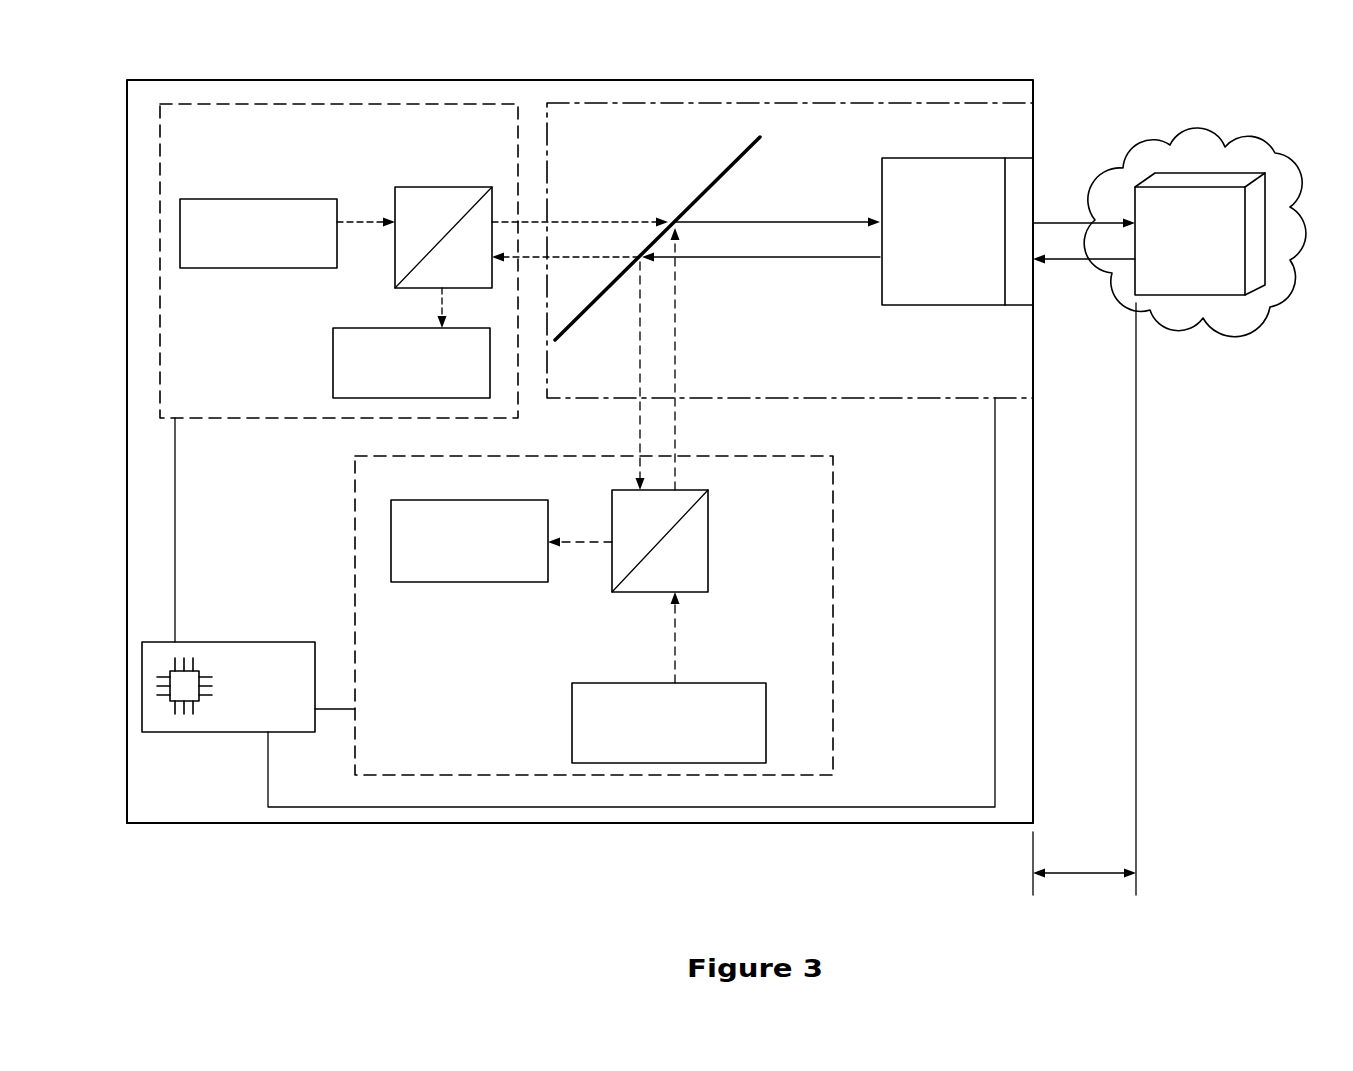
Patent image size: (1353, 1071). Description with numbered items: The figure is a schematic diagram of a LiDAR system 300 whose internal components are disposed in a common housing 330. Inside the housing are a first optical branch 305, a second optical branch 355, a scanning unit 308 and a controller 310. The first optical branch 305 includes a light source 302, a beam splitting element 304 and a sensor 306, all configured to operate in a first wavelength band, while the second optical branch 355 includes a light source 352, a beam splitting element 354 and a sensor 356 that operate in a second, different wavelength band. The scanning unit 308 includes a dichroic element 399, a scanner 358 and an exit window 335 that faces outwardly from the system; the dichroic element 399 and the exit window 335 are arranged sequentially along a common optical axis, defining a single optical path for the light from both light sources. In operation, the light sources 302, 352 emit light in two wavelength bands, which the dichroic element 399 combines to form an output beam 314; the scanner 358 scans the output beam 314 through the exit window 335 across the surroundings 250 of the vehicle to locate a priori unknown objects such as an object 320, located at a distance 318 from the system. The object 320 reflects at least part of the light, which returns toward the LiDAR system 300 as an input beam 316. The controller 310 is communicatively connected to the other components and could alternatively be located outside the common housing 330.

The LiDAR system 300 is at (238, 837).
The light source 302 is at (236, 248).
The beam splitting element 304 is at (422, 187).
The first optical branch 305 is at (240, 420).
The sensor 306 is at (388, 377).
The scanning unit 308 is at (920, 398).
The controller 310 is at (235, 702).
The output beam 314 is at (777, 222).
The input beam 316 is at (783, 258).
The distance 318 is at (1078, 875).
The object 320 is at (1168, 250).
The common housing 330 is at (902, 825).
The exit window 335 is at (1044, 170).
The light source 352 is at (645, 740).
The beam splitting element 354 is at (708, 540).
The second optical branch 355 is at (355, 537).
The sensor 356 is at (445, 556).
The scanner 358 is at (930, 252).
The dichroic element 399 is at (722, 172).
The surroundings 250 is at (1242, 327).